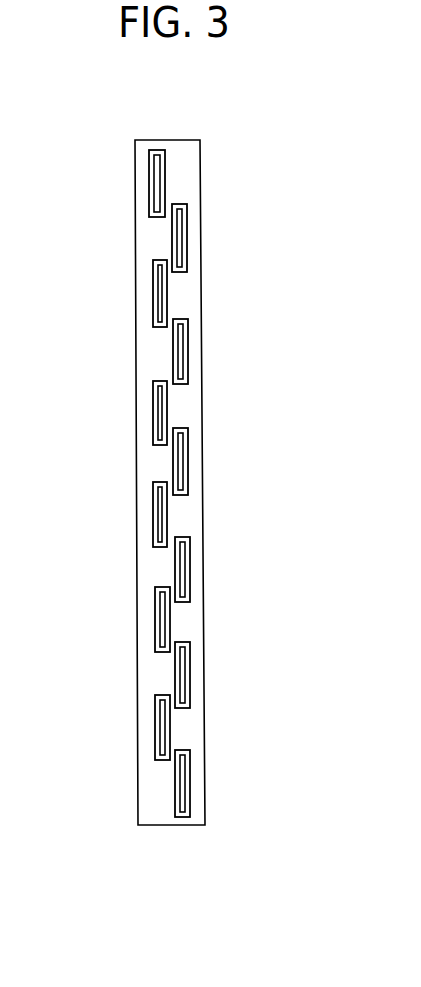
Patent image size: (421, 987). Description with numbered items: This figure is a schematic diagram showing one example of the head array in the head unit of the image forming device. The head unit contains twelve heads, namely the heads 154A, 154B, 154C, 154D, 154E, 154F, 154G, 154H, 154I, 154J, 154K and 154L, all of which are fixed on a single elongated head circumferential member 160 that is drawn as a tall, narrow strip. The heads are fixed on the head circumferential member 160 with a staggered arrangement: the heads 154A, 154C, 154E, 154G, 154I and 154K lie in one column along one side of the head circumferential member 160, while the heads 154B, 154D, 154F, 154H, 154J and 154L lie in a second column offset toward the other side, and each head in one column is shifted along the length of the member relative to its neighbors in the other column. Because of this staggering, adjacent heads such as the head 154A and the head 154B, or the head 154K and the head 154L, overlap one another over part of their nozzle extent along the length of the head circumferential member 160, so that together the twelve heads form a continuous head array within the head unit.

The head circumferential member 160 is at (180, 165).
The head 154A is at (160, 200).
The head 154B is at (182, 240).
The head 154C is at (158, 302).
The head 154D is at (180, 342).
The head 154E is at (162, 413).
The head 154F is at (182, 455).
The head 154G is at (163, 525).
The head 154H is at (183, 570).
The head 154I is at (162, 632).
The head 154J is at (183, 670).
The head 154K is at (163, 733).
The head 154L is at (185, 775).